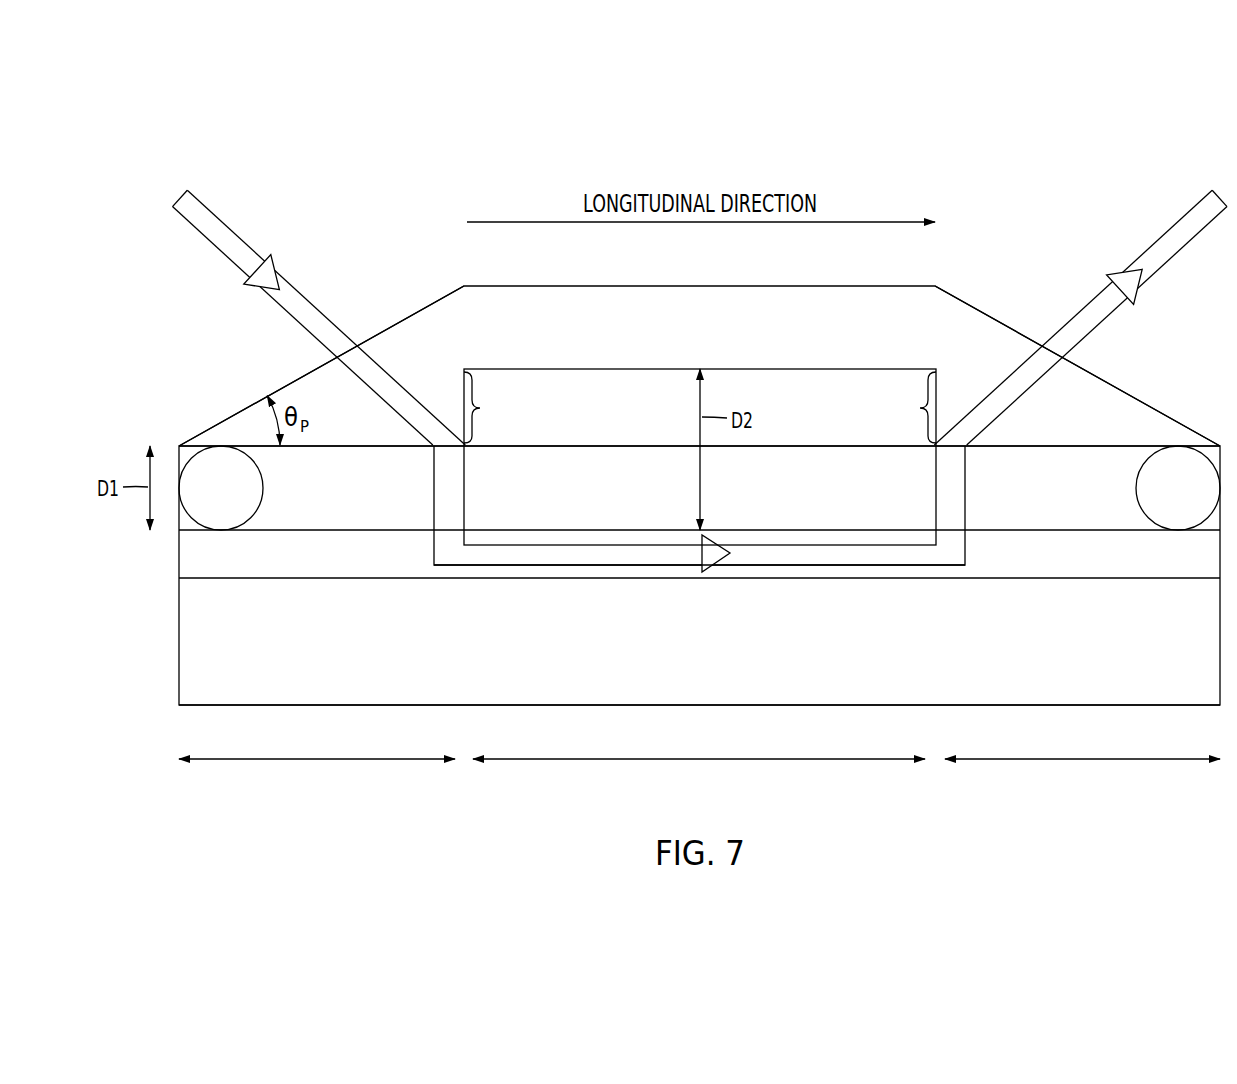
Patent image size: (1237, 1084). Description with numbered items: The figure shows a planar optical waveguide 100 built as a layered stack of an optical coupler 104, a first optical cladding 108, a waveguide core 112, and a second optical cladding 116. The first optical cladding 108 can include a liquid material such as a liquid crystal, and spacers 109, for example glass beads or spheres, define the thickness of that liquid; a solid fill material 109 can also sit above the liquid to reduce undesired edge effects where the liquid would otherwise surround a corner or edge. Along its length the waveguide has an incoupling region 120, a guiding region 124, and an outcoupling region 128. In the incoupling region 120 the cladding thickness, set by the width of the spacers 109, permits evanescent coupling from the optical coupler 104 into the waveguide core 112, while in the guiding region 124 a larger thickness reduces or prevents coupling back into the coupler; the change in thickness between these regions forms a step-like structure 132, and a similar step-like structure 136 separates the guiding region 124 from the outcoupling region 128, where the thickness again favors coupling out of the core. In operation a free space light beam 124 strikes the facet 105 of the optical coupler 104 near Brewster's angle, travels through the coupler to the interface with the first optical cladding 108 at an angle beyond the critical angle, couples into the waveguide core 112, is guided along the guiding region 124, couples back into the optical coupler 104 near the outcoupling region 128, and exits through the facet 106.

The optical waveguide device 100 is at (1093, 195).
The optical coupler 104 is at (700, 286).
The facet 105 is at (296, 379).
The facet 106 is at (1137, 393).
The first optical cladding 108 is at (177, 458).
The spacers 109 is at (263, 487).
The waveguide core 112 is at (178, 553).
The second optical cladding 116 is at (178, 632).
The incoupling region 120 is at (317, 760).
The guiding region 124 is at (294, 284).
The outcoupling region 128 is at (1082, 760).
The step-like structure 132 is at (490, 407).
The step-like structure 136 is at (909, 407).